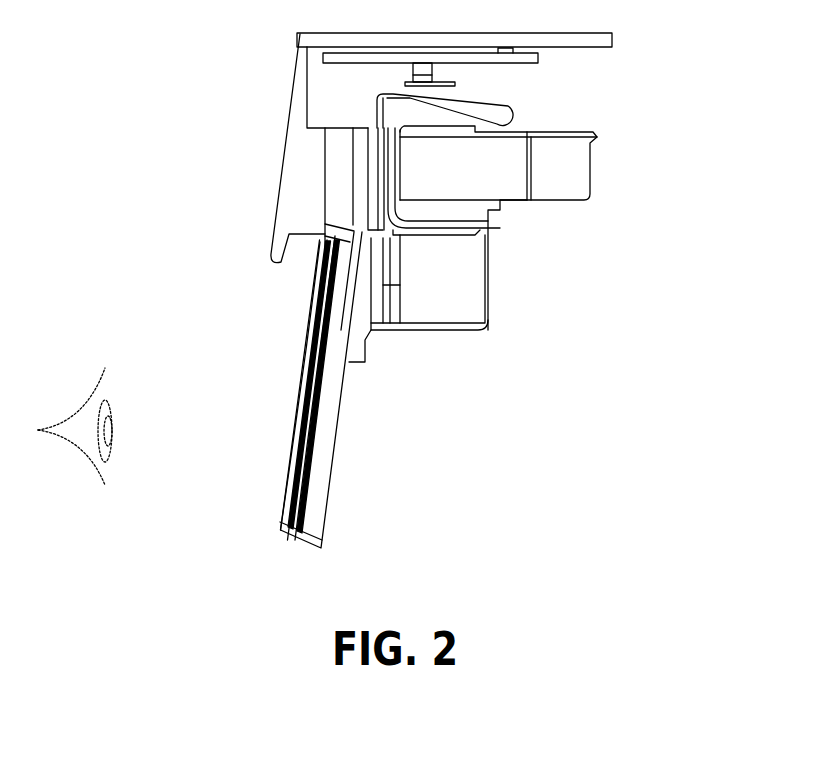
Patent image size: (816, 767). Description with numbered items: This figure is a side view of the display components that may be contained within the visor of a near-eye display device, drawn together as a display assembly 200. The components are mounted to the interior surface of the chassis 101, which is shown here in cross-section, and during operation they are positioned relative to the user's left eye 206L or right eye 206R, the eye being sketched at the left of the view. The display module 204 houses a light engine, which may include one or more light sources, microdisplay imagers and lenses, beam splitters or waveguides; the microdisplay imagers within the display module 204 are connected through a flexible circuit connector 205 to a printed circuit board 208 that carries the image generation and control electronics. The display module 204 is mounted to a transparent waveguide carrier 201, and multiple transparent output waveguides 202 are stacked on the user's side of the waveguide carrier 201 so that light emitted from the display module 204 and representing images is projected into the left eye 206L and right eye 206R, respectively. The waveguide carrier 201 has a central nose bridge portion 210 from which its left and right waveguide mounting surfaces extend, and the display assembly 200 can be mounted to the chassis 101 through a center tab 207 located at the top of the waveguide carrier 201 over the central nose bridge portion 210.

The display assembly 200 is at (457, 290).
The chassis 101 is at (284, 166).
The waveguide carrier 201 is at (311, 386).
The output waveguides 202 is at (303, 440).
The display module 204 is at (513, 265).
The flexible circuit connector 205 is at (512, 120).
The left eye 206L is at (131, 411).
The right eye 206R is at (114, 426).
The center tab 207 is at (325, 207).
The printed circuit board 208 is at (338, 76).
The central nose bridge portion 210 is at (366, 350).